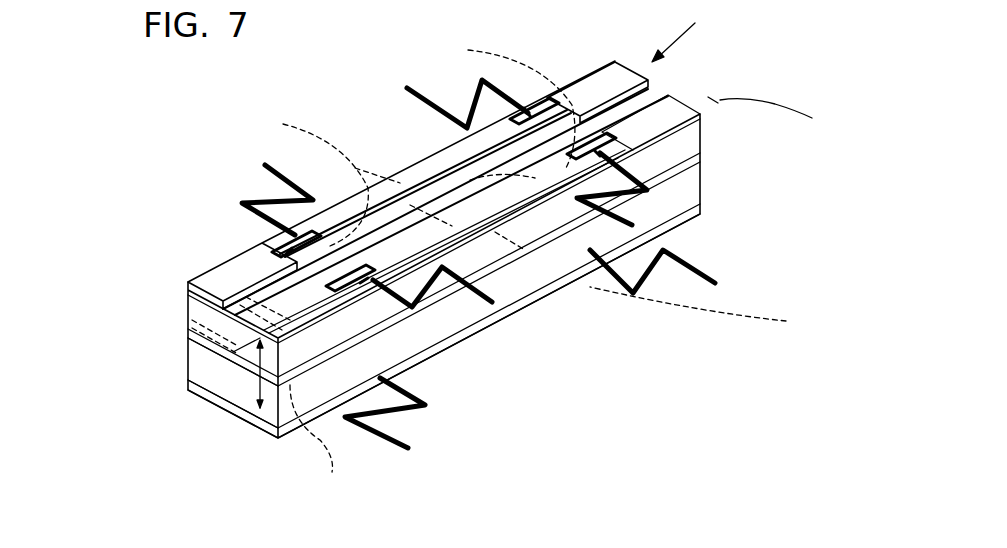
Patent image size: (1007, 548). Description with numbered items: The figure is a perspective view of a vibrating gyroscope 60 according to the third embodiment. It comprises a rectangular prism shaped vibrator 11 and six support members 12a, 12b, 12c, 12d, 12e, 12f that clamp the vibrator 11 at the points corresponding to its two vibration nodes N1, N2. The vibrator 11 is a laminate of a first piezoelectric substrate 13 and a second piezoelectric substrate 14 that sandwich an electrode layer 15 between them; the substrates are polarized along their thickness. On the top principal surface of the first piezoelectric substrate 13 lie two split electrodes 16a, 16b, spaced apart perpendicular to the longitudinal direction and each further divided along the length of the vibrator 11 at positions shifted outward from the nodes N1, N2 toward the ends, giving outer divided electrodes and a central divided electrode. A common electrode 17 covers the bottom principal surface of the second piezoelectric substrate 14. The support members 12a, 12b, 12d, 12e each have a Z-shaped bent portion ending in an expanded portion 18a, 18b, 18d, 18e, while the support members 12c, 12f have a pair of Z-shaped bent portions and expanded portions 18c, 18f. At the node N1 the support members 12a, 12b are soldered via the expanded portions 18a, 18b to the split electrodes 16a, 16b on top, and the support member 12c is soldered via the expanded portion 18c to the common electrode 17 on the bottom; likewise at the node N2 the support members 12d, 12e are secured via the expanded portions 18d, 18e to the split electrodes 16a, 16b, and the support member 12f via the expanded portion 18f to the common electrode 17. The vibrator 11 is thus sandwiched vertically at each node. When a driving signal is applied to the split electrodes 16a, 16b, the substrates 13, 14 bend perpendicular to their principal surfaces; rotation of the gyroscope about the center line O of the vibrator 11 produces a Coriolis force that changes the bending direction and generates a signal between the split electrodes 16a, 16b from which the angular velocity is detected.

The vibrating gyroscope 60 is at (695, 31).
The vibrator 11 is at (660, 87).
The first piezoelectric substrate 13 is at (186, 308).
The second piezoelectric substrate 14 is at (186, 383).
The electrode layer 15 is at (186, 338).
The common electrode 17 is at (250, 427).
The split electrode 16a is at (258, 270).
The split electrode 16b is at (405, 335).
The support member 12a is at (262, 160).
The support member 12b is at (505, 282).
The support member 12c is at (408, 446).
The support member 12d is at (408, 85).
The support member 12e is at (698, 216).
The support member 12f is at (713, 275).
The expanded portion 18a is at (268, 243).
The expanded portion 18b is at (445, 350).
The expanded portion 18c is at (330, 446).
The expanded portion 18d is at (515, 118).
The expanded portion 18e is at (698, 176).
The expanded portion 18f is at (715, 314).
The vibration node N1 is at (302, 172).
The vibration node N2 is at (500, 100).
The center line O is at (772, 118).